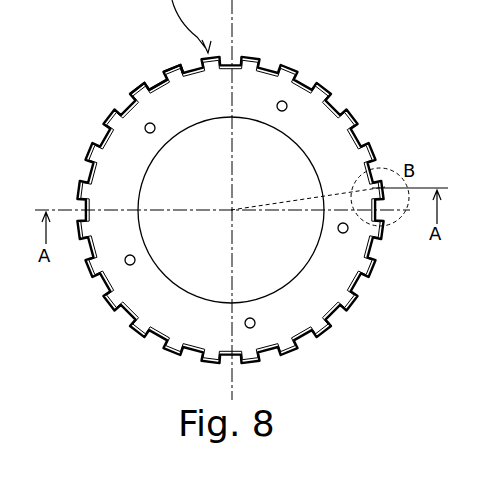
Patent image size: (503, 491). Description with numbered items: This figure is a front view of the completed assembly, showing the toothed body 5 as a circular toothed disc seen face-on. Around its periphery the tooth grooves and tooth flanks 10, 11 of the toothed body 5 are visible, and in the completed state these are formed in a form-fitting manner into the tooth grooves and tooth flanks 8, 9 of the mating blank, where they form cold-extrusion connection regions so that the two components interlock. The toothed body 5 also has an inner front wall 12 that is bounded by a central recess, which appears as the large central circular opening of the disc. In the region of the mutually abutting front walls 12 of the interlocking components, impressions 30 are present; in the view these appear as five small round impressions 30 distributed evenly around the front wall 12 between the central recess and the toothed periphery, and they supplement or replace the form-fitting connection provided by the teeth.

The toothed body 5 is at (269, 78).
The tooth groove 8 is at (158, 77).
The tooth flank 9 is at (180, 67).
The tooth groove 10 is at (159, 90).
The tooth flank 11 is at (176, 76).
The inner front wall 12 is at (168, 298).
The impression 30 is at (118, 103).